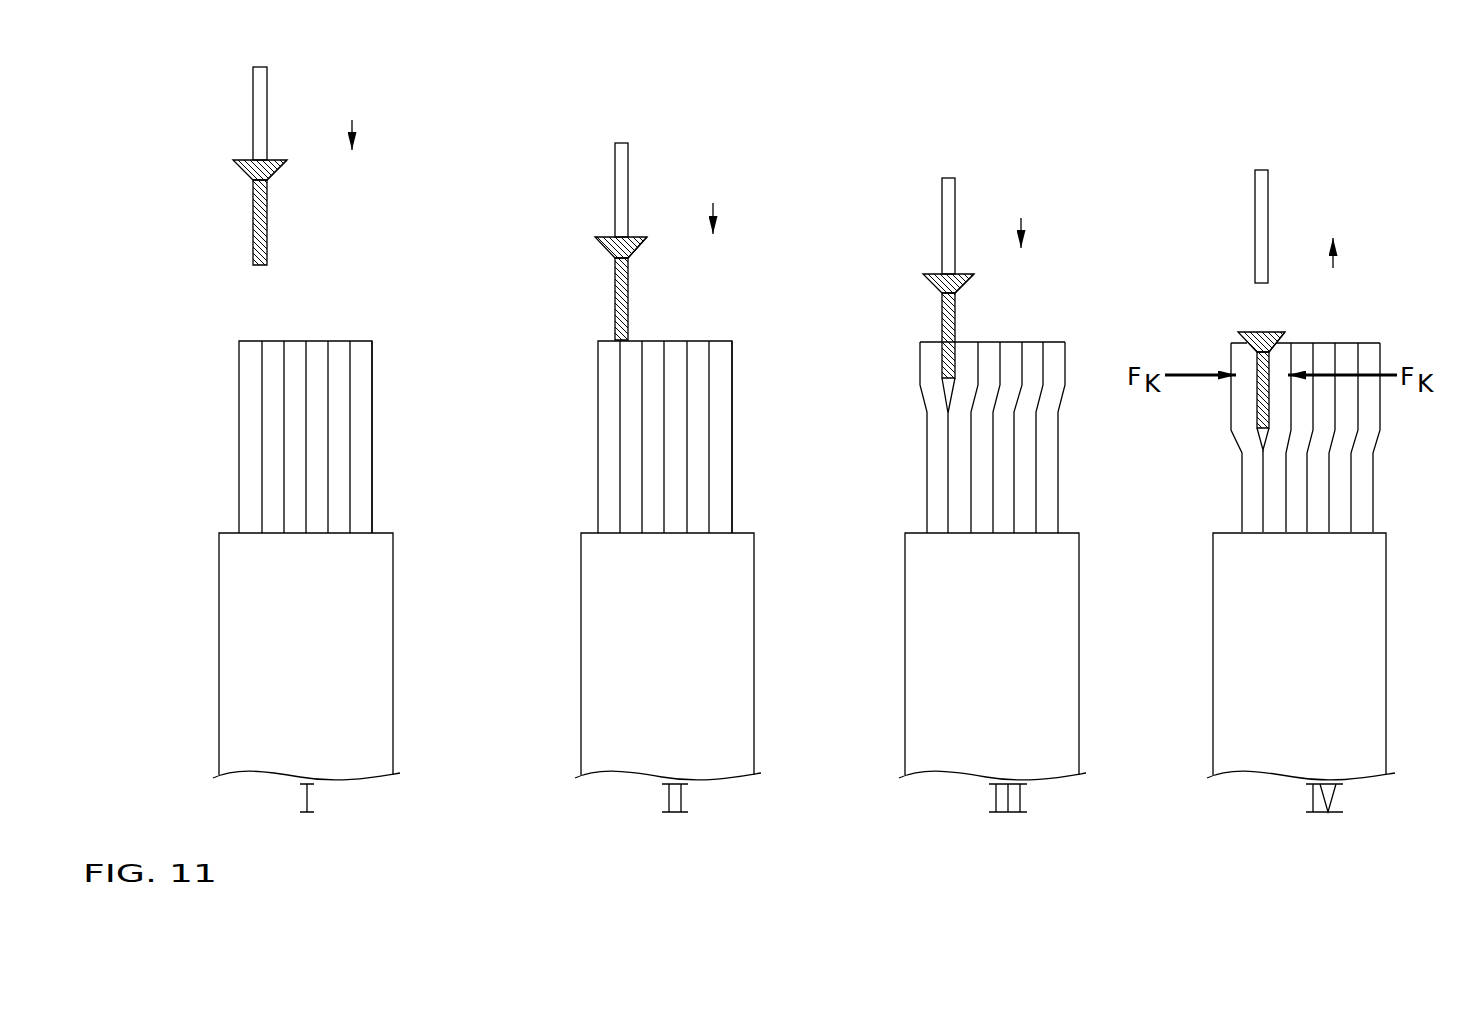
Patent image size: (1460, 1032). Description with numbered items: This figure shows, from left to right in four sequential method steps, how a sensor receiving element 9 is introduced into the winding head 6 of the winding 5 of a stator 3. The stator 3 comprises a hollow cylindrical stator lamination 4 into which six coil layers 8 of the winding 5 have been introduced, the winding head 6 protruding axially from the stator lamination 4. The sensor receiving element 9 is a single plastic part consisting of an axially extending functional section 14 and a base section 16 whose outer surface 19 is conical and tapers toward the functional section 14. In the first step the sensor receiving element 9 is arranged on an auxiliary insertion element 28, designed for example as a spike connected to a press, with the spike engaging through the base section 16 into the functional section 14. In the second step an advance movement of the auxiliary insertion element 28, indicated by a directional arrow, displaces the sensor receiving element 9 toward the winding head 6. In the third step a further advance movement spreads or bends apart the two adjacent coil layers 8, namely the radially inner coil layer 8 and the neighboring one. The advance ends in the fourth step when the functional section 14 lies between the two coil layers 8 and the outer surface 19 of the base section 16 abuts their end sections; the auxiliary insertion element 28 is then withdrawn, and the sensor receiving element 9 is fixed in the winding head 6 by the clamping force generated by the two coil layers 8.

The stator 3 is at (180, 712).
The stator lamination 4 is at (392, 702).
The winding 5 is at (212, 388).
The winding head 6 is at (372, 461).
The coil layers 8 is at (362, 364).
The sensor receiving element 9 is at (763, 305).
The functional section 14 is at (235, 219).
The base section 16 is at (222, 177).
The outer surface 19 is at (295, 182).
The auxiliary insertion element 28 is at (260, 91).